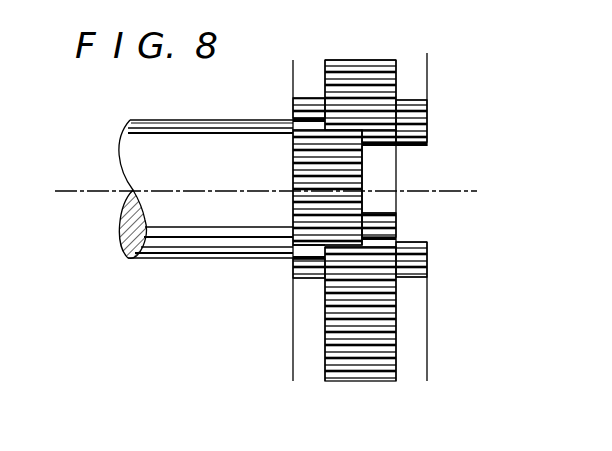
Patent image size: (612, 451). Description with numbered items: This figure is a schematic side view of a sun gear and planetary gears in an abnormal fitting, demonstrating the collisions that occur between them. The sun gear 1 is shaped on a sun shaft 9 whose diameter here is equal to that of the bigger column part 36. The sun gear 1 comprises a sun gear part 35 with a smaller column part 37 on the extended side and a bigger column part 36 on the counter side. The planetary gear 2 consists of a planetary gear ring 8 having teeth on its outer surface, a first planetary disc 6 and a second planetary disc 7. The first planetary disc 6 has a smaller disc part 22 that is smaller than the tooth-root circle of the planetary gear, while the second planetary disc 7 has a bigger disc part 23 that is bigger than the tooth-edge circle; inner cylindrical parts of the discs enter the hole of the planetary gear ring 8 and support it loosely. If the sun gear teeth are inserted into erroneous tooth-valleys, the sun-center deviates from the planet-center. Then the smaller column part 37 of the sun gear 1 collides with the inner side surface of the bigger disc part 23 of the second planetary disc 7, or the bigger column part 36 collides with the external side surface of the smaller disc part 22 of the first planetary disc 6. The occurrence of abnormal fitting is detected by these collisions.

The sun gear 1 is at (267, 337).
The planetary gear 2 is at (297, 29).
The first planetary disc 6 is at (302, 98).
The second planetary disc 7 is at (410, 75).
The planetary gear ring 8 is at (357, 80).
The sun shaft 9 is at (148, 152).
The smaller disc part 22 is at (293, 77).
The bigger disc part 23 is at (420, 145).
The sun gear part 35 is at (316, 247).
The bigger column part 36 is at (291, 118).
The smaller column part 37 is at (387, 162).